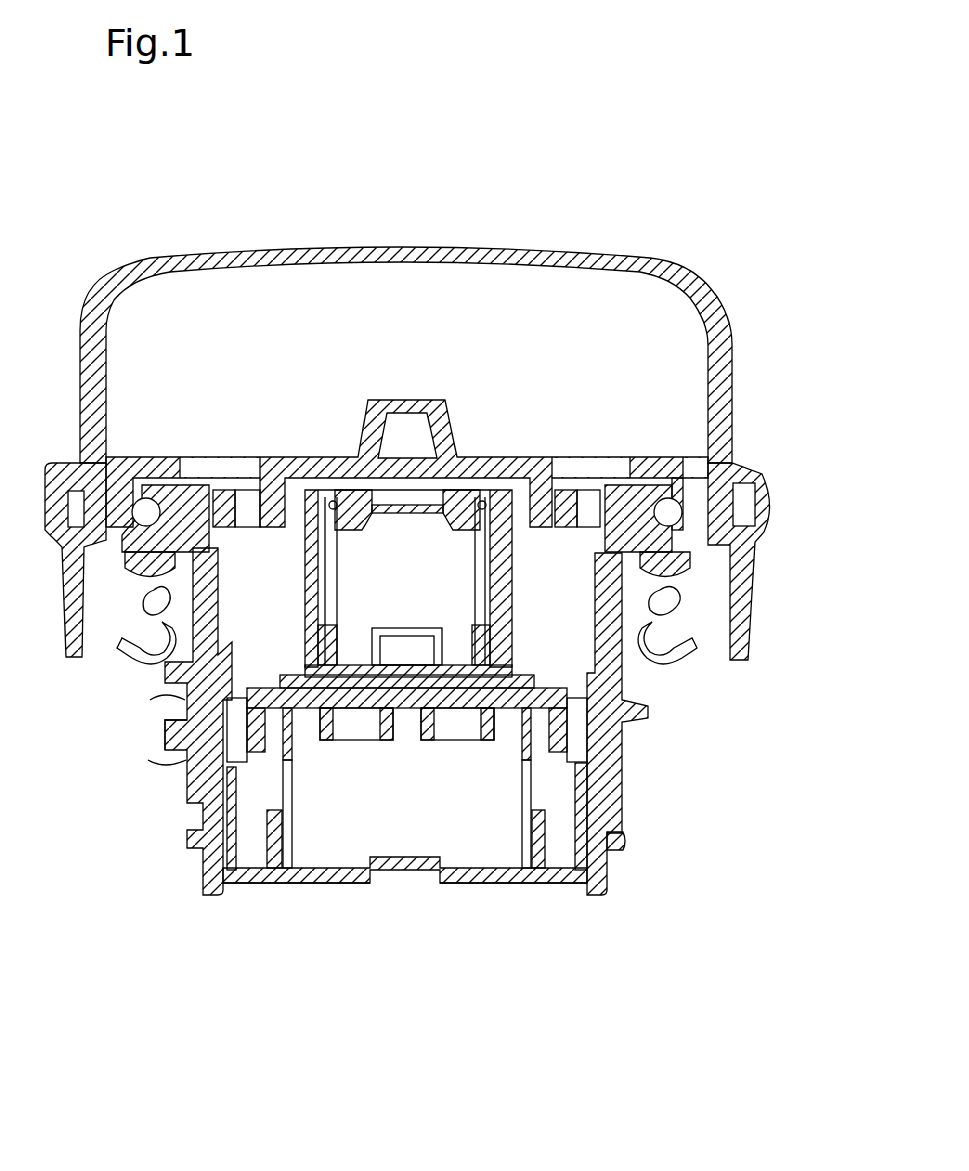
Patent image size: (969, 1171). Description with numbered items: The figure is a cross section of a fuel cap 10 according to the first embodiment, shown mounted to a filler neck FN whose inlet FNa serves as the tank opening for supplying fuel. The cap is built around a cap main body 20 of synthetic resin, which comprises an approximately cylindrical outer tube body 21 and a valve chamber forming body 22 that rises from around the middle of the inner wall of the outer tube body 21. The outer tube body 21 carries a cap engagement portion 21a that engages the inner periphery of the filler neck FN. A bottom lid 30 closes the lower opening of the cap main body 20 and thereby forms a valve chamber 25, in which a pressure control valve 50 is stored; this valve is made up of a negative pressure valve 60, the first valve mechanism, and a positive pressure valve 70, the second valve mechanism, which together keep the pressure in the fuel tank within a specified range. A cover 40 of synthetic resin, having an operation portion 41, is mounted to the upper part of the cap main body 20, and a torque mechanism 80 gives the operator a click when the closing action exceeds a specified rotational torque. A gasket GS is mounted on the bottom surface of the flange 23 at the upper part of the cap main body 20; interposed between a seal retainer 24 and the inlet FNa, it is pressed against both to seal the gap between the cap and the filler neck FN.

The fuel cap 10 is at (752, 242).
The cap main body 20 is at (66, 680).
The outer tube body 21 is at (193, 707).
The cap engagement portion 21a is at (190, 745).
The valve chamber forming body 22 is at (303, 608).
The flange 23 is at (688, 500).
The seal retainer 24 is at (700, 525).
The valve chamber 25 is at (432, 805).
The bottom lid 30 is at (563, 890).
The cover 40 is at (724, 324).
The operation portion 41 is at (567, 252).
The pressure control valve 50 is at (752, 675).
The negative pressure valve 60 is at (505, 747).
The positive pressure valve 70 is at (630, 668).
The torque mechanism 80 is at (660, 452).
The gasket GS is at (702, 542).
The filler neck FN is at (655, 655).
The inlet FNa is at (650, 638).